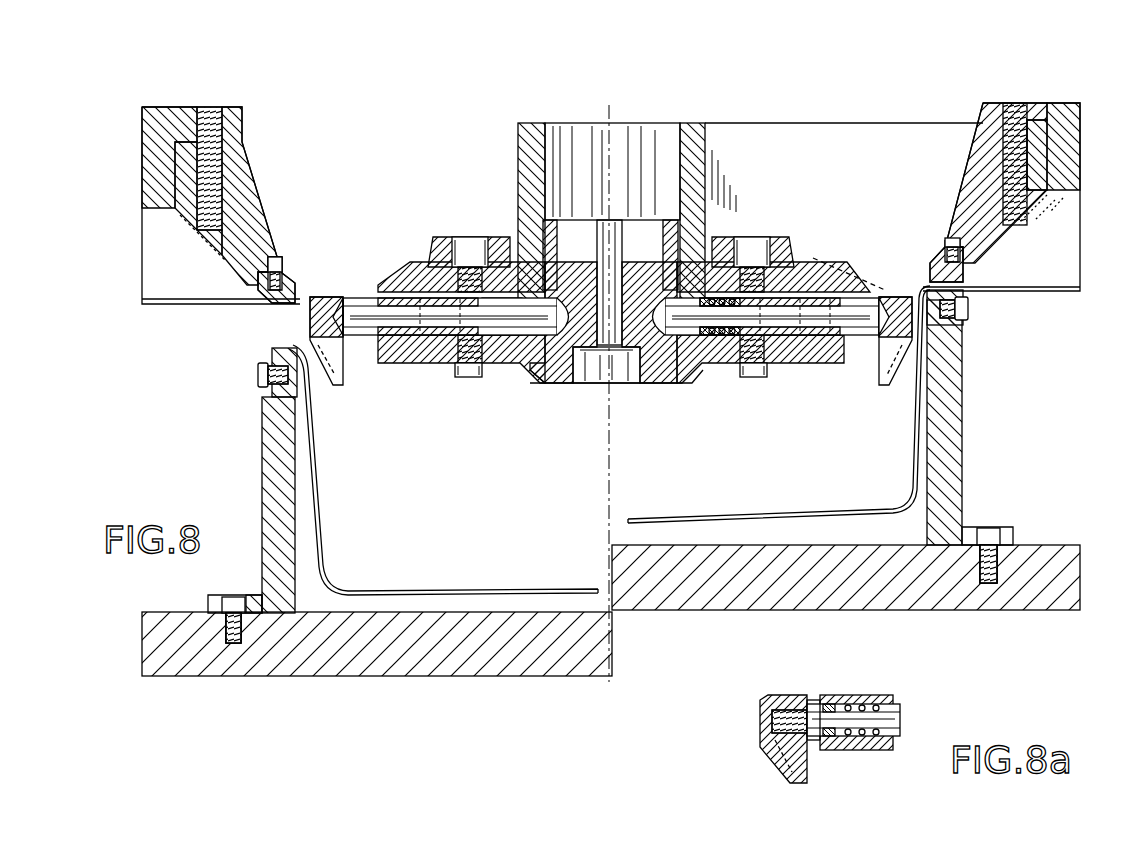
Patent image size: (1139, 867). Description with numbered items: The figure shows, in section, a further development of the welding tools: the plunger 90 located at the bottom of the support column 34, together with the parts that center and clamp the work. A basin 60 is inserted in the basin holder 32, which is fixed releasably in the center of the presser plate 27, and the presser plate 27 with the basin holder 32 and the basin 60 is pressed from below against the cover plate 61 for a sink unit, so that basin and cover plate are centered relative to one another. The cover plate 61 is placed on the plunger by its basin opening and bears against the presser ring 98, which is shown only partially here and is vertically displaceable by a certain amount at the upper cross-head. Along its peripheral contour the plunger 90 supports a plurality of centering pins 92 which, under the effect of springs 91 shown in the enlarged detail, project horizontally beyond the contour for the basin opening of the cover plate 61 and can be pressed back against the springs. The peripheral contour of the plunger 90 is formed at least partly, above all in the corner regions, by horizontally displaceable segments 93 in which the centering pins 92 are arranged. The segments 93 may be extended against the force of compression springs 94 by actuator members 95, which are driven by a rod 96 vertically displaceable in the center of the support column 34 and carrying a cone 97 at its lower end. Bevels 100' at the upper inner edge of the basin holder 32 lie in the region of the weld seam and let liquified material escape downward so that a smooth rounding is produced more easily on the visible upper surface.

In FIG. 8, the presser plate 27 is at (432, 662).
In FIG. 8, the basin holder 32 is at (955, 412).
In FIG. 8, the support column 34 is at (530, 158).
In FIG. 8, the basin 60 is at (883, 513).
In FIG. 8, the cover plate 61 is at (170, 300).
In FIG. 8, the plunger 90 is at (688, 408).
In FIG. 8a, the springs 91 is at (862, 705).
In FIG. 8, the centering pins 92 is at (302, 297).
In FIG. 8a, the centering pins 92 is at (775, 742).
In FIG. 8, the horizontally displaceable segments 93 is at (340, 298).
In FIG. 8, the compression springs 94 is at (730, 345).
In FIG. 8, the actuator members 95 is at (812, 322).
In FIG. 8, the rod 96 is at (612, 236).
In FIG. 8, the cone 97 is at (575, 275).
In FIG. 8, the presser ring 98 is at (1072, 178).
In FIG. 8, the bevels 100' is at (615, 345).